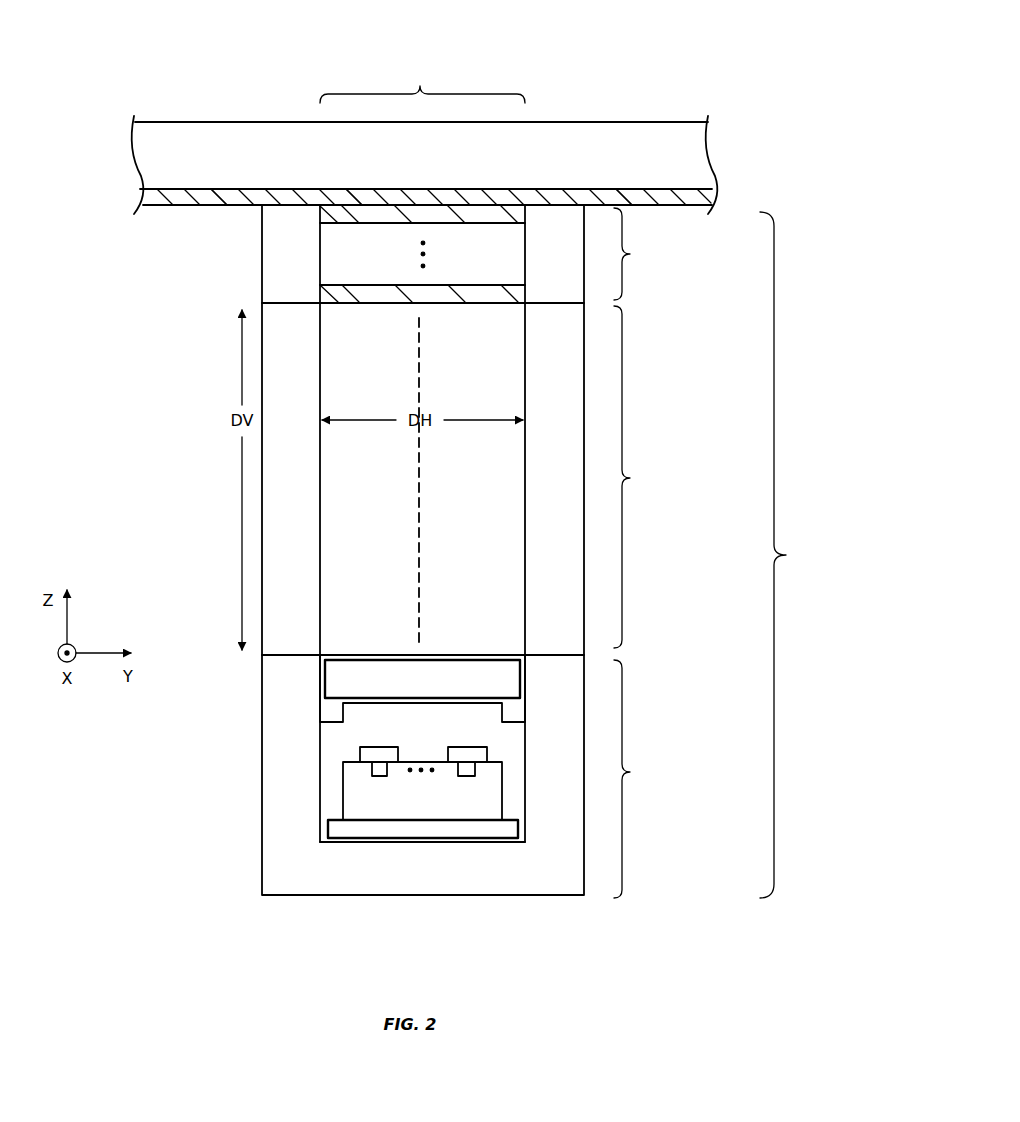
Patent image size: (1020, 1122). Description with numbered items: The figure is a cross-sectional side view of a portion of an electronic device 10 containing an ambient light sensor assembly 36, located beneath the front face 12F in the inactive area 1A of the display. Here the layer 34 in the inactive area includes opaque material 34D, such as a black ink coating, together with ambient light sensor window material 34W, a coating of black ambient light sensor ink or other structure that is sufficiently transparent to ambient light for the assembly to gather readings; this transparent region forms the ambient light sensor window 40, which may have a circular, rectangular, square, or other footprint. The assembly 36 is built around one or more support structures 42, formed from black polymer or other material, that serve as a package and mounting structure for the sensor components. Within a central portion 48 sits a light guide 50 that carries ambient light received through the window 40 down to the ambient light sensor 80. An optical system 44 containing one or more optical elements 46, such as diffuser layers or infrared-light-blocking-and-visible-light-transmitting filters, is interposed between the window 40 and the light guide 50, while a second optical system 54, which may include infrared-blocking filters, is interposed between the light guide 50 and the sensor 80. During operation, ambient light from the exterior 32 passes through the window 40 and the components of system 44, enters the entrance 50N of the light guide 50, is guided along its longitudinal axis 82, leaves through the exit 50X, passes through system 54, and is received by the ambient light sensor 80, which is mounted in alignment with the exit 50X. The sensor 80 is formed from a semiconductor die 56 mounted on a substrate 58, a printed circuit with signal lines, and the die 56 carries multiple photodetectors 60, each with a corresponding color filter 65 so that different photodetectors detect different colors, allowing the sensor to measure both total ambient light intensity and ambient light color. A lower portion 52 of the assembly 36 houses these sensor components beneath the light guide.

The electronic device 10 is at (824, 86).
The inactive area 1A is at (592, 60).
The exterior 32 is at (108, 56).
The front face 12F is at (690, 154).
The layer 34 is at (158, 219).
The ambient light sensor window material 34W is at (356, 192).
The opaque material 34D is at (210, 198).
The ambient light sensor window 40 is at (422, 84).
The support structures 42 is at (268, 268).
The optical system 44 is at (634, 254).
The optical elements 46 is at (481, 216).
The entrance 50N is at (333, 299).
The central portion 48 is at (634, 477).
The light guide 50 is at (348, 598).
The longitudinal axis 82 is at (423, 351).
The ambient light sensor assembly 36 is at (786, 555).
The exit 50X is at (343, 656).
The optical system 54 is at (357, 690).
The semiconductor die 56 is at (343, 792).
The substrate 58 is at (418, 828).
The photodetectors 60 is at (380, 777).
The color filters 65 is at (381, 746).
The ambient light sensor 80 is at (514, 805).
The lower portion 52 is at (634, 779).